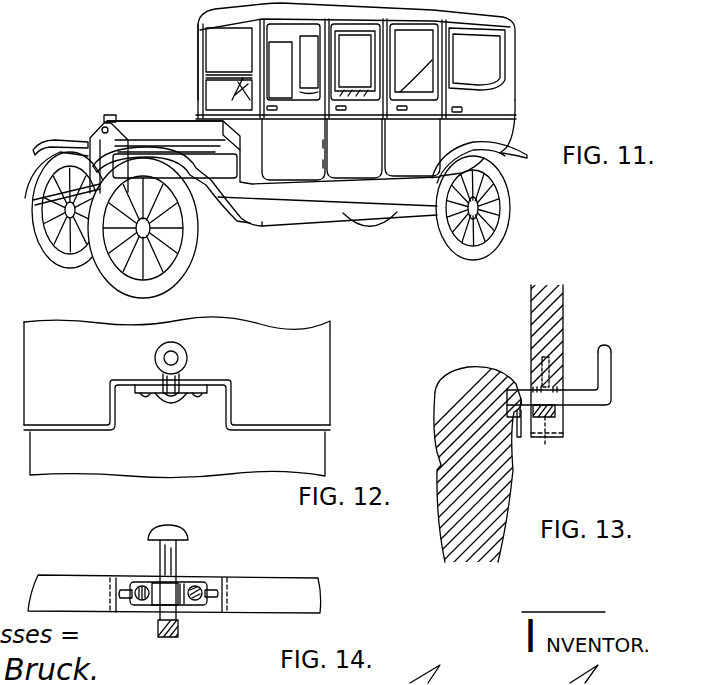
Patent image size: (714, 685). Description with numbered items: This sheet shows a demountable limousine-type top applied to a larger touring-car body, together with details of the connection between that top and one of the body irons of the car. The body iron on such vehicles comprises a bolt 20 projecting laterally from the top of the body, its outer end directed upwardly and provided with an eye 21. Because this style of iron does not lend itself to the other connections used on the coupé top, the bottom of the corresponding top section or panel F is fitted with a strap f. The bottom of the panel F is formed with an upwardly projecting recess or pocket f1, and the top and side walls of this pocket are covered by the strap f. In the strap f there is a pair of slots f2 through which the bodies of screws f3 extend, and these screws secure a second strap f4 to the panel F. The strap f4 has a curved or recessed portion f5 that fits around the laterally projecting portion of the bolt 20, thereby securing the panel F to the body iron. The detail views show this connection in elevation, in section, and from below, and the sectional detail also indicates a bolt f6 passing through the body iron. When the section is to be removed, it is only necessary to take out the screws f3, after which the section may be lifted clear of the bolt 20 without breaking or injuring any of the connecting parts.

In FIG. 12, the strap f is at (75, 427).
In FIG. 13, the recess or pocket f1 is at (553, 424).
In FIG. 14, the slots f2 is at (126, 590).
In FIG. 12, the screws f3 is at (145, 394).
In FIG. 14, the screws f3 is at (197, 587).
In FIG. 12, the strap f4 is at (157, 437).
In FIG. 14, the strap f4 is at (128, 601).
In FIG. 13, the curved or recessed portion f5 is at (530, 392).
In FIG. 13, the bolt f6 is at (546, 415).
In FIG. 12, the top section or panel F is at (245, 343).
In FIG. 13, the bolt 20 is at (567, 388).
In FIG. 13, the eye 21 is at (605, 381).